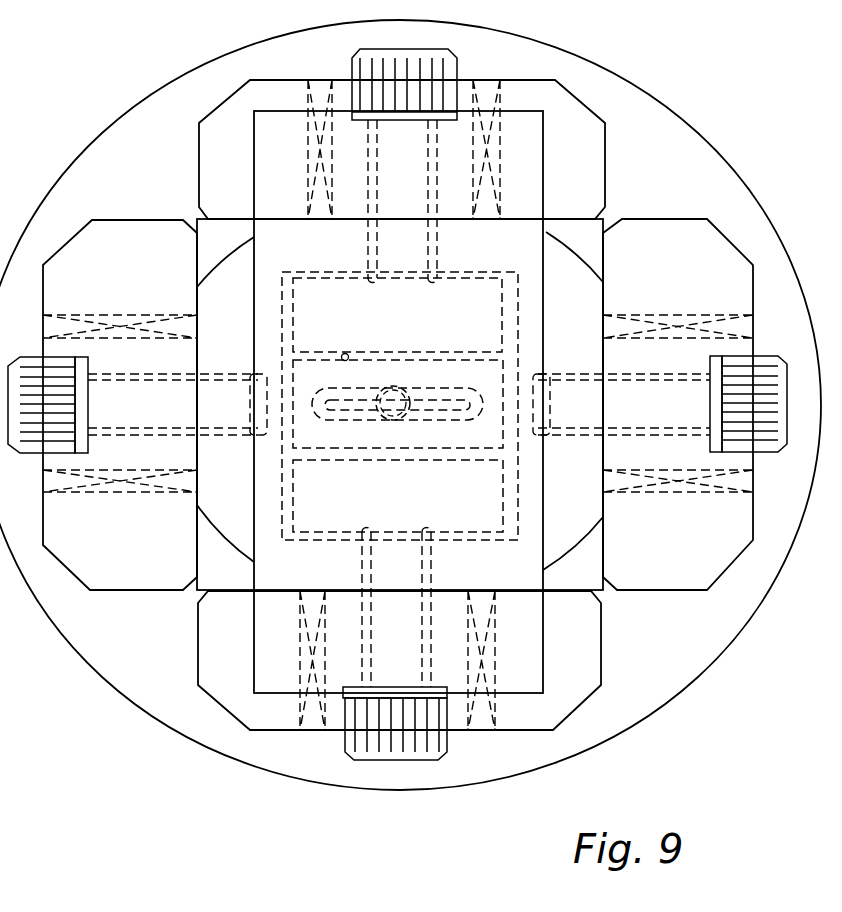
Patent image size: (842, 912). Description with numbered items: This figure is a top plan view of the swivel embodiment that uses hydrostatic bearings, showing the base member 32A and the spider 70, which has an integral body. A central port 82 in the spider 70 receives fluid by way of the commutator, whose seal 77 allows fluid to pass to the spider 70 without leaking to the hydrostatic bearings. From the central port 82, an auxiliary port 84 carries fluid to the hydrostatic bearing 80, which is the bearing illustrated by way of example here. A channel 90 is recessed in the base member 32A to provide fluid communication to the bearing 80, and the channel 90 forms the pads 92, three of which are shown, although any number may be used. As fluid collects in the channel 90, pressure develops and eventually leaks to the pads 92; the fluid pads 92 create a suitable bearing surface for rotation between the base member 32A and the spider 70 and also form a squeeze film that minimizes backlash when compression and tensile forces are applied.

The base member 32A is at (533, 112).
The hydrostatic bearing 80 is at (517, 229).
The spider 70 is at (569, 553).
The channel 90 is at (512, 308).
The pads 92 is at (426, 324).
The seal 77 is at (441, 387).
The central port 82 is at (396, 388).
The auxiliary port 84 is at (345, 354).